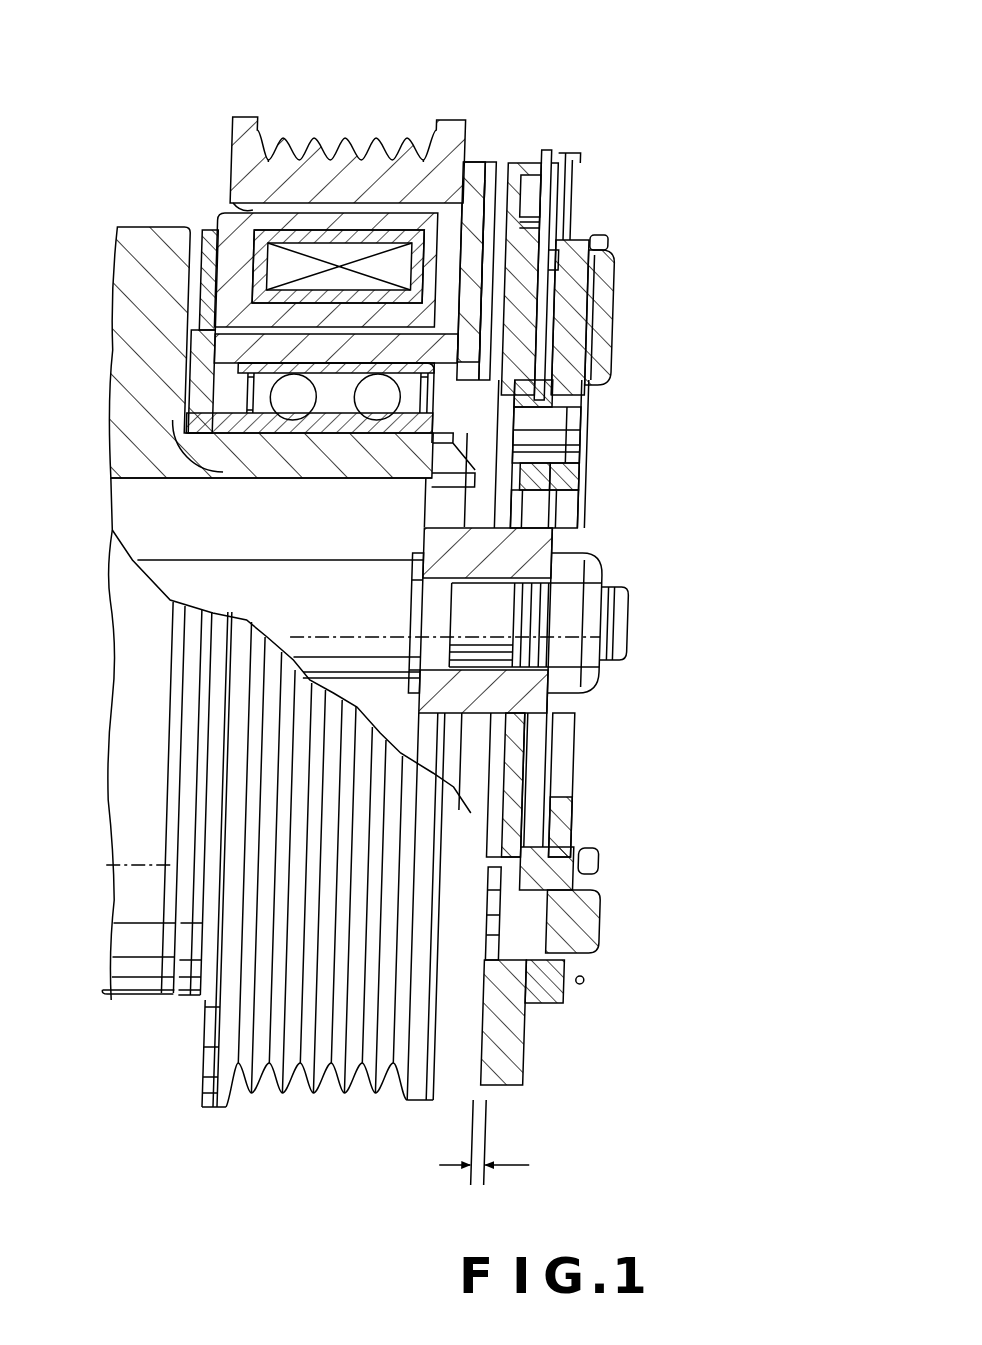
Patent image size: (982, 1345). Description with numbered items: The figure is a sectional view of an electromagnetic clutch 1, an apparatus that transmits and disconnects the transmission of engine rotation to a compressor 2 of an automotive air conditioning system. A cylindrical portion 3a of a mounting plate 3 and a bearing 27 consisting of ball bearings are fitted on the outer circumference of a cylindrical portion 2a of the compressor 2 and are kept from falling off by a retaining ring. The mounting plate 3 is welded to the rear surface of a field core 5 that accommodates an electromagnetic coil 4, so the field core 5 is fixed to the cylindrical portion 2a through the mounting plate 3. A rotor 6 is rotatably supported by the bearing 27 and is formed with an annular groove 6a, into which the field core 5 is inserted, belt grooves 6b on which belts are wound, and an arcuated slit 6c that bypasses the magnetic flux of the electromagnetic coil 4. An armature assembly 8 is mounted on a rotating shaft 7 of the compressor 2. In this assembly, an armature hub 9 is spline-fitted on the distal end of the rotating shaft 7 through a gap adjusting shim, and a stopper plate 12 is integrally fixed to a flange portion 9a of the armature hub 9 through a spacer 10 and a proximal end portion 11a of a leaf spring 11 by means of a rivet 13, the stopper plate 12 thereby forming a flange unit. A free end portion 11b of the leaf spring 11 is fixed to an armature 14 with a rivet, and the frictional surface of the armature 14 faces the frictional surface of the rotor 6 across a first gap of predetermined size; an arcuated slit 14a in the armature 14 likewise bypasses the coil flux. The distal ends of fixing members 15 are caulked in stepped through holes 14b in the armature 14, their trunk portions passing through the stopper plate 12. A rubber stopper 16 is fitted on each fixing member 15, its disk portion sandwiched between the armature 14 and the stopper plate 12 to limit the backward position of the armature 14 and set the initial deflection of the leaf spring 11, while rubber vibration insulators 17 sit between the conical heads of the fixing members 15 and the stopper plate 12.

The electromagnetic clutch 1 is at (377, 593).
The compressor 2 is at (118, 315).
The cylindrical portion of the compressor 2a is at (322, 480).
The mounting plate 3 is at (192, 367).
The cylindrical portion of the mounting plate 3a is at (221, 433).
The electromagnetic coil 4 is at (255, 268).
The field core 5 is at (255, 266).
The rotor 6 is at (445, 137).
The annular groove 6a is at (222, 205).
The belt grooves 6b is at (330, 143).
The arcuated slit 6c is at (447, 223).
The rotating shaft 7 is at (163, 577).
The armature assembly 8 is at (619, 432).
The armature hub 9 is at (550, 543).
The flange portion of the armature hub 9a is at (545, 390).
The spacer 10 is at (552, 493).
The leaf spring 11 is at (574, 332).
The proximal end portion of the leaf spring 11a is at (576, 523).
The free end portion of the leaf spring 11b is at (533, 160).
The stopper plate 12 is at (561, 353).
The rivet 13 is at (577, 447).
The armature 14 is at (520, 165).
The arcuated slit of the armature 14a is at (545, 265).
The stepped through holes 14b is at (531, 1017).
The fixing members 15 is at (597, 293).
The rubber stopper 16 is at (563, 835).
The rubber vibration insulators 17 is at (573, 247).
The bearing 27 is at (438, 397).